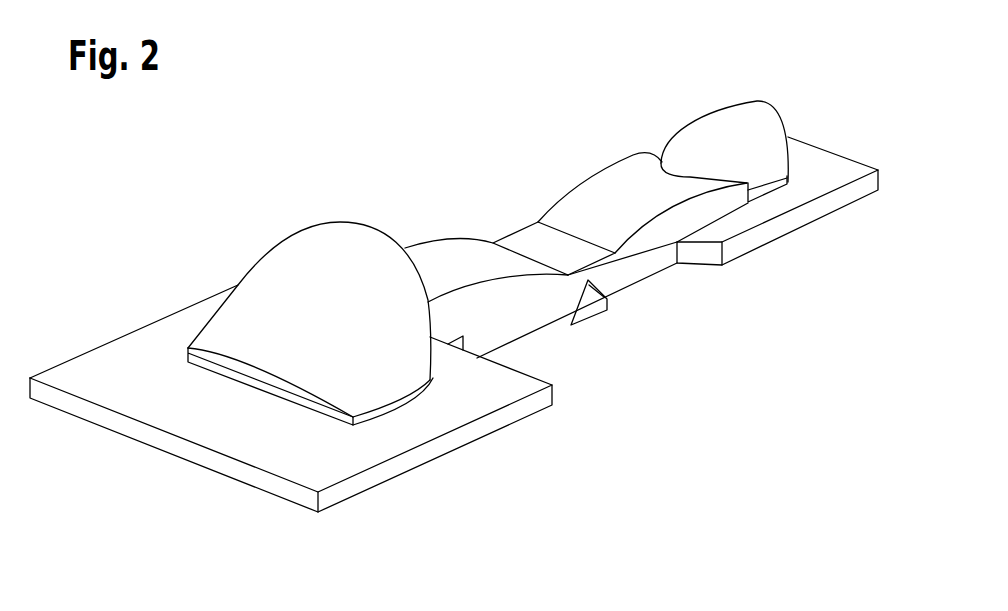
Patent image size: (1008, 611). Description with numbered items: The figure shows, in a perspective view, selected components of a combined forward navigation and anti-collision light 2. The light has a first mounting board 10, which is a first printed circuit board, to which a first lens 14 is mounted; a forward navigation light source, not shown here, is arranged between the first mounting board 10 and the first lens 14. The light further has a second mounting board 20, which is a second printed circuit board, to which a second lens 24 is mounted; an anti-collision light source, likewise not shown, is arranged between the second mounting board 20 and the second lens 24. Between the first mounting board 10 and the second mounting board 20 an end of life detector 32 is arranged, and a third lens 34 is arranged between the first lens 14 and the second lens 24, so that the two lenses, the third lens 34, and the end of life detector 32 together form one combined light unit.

The combined forward navigation and anti-collision light 2 is at (172, 270).
The first mounting board 10 is at (513, 412).
The first lens 14 is at (306, 267).
The second mounting board 20 is at (826, 208).
The second lens 24 is at (748, 132).
The end of life detector 32 is at (588, 310).
The third lens 34 is at (608, 192).